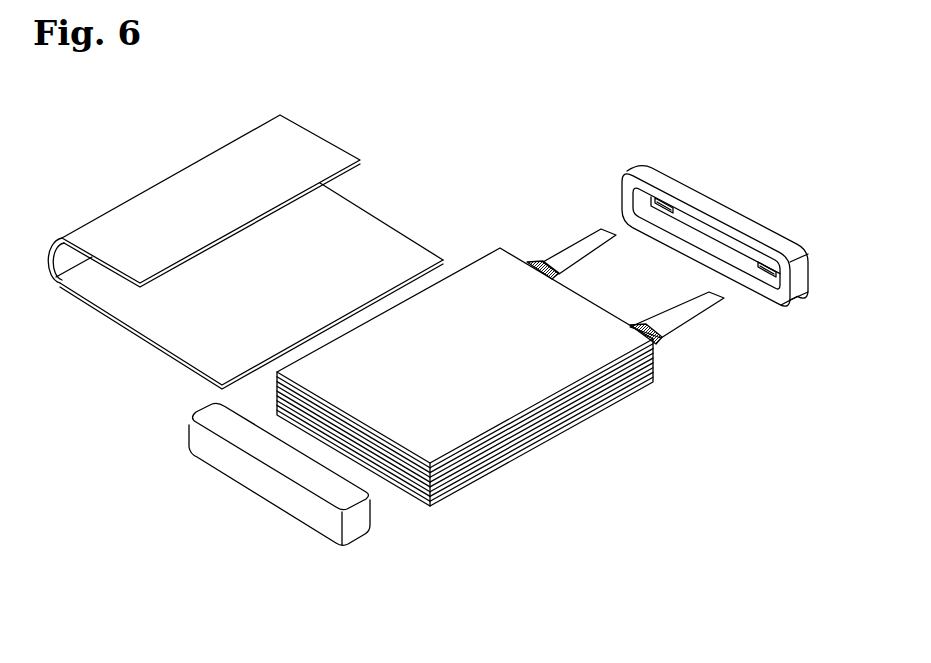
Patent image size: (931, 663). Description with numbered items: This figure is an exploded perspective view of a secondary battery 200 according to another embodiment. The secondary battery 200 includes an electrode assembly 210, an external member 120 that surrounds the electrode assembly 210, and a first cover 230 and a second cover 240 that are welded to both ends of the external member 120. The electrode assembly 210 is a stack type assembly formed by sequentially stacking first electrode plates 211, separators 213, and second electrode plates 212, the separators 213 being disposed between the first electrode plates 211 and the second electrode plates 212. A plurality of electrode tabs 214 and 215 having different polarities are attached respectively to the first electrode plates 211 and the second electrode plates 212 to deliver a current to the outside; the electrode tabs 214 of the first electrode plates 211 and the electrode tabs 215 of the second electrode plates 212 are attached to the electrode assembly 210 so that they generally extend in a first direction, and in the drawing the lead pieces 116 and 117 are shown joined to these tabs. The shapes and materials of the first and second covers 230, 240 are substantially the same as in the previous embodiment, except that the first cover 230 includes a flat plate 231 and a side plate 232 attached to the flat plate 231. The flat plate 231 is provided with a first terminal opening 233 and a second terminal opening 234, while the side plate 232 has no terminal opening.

The secondary battery 200 is at (98, 94).
The external member 120 is at (125, 191).
The electrode assembly 210 is at (492, 487).
The first electrode plates 211 is at (655, 388).
The second electrode plates 212 is at (635, 363).
The separators 213 is at (587, 388).
The electrode tabs 214 is at (534, 261).
The electrode tabs 215 is at (657, 347).
The first lead tab 116 is at (600, 233).
The second lead tab 117 is at (708, 303).
The first cover 230 is at (622, 158).
The flat plate 231 is at (712, 235).
The side plate 232 is at (795, 248).
The first terminal opening 233 is at (668, 198).
The second terminal opening 234 is at (765, 260).
The second cover 240 is at (262, 488).